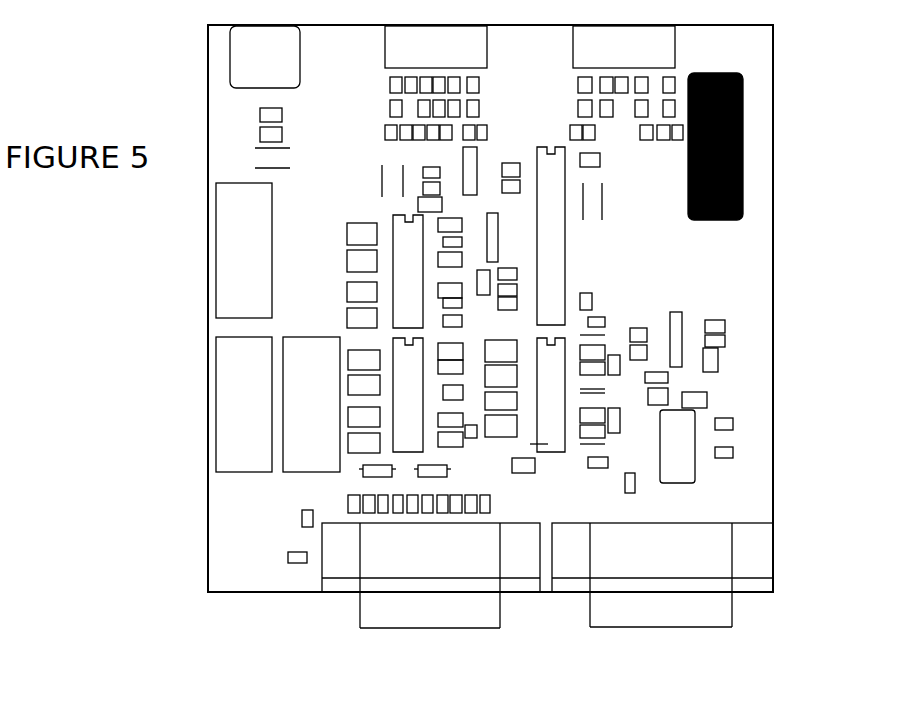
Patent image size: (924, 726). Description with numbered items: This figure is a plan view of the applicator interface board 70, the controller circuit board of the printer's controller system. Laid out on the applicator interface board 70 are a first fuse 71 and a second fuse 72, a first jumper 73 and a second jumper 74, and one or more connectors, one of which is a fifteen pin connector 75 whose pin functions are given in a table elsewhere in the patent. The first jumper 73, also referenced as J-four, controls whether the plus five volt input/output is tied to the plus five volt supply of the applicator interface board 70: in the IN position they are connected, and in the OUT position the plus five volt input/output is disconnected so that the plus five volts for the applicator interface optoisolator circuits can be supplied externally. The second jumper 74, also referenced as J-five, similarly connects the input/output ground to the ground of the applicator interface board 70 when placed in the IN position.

The applicator interface board 70 is at (476, 355).
The first fuse 71 is at (238, 378).
The second fuse 72 is at (293, 423).
The first jumper 73 is at (366, 486).
The second jumper 74 is at (448, 486).
The fifteen pin connector 75 is at (700, 560).